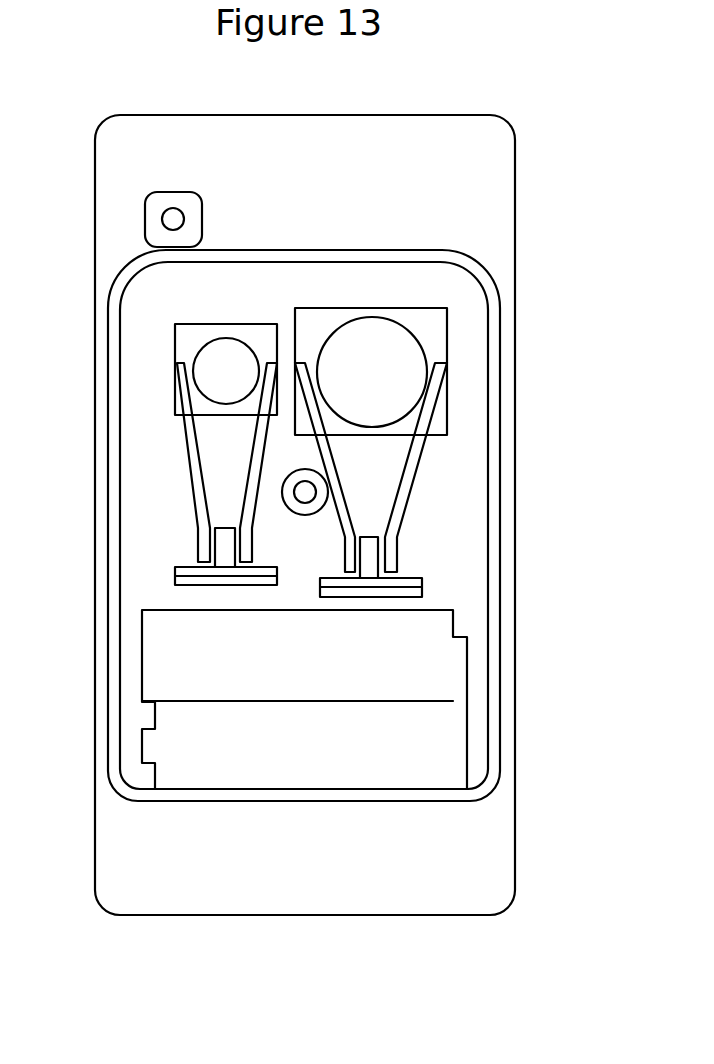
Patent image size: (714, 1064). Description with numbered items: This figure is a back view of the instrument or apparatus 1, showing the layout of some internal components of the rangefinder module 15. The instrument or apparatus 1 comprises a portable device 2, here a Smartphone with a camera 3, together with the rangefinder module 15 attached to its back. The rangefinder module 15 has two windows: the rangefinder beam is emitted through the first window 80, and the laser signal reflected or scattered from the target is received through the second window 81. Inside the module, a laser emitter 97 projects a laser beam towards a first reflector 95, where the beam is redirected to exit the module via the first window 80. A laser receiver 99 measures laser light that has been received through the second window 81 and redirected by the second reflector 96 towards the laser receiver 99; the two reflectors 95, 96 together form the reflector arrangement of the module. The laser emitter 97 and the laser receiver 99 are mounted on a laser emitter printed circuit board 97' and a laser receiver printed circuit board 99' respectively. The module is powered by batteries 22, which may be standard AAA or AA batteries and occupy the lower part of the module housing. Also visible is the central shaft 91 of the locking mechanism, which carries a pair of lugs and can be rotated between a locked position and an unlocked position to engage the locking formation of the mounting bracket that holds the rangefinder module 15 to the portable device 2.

The instrument or apparatus 1 is at (537, 112).
The portable device 2 is at (457, 200).
The camera 3 is at (160, 205).
The rangefinder module 15 is at (493, 643).
The batteries 22 is at (268, 655).
The first window 80 is at (228, 383).
The second window 81 is at (393, 378).
The central shaft 91 is at (305, 492).
The first reflector 95 is at (185, 337).
The second reflector 96 is at (463, 342).
The laser emitter 97 is at (152, 508).
The laser emitter printed circuit board 97' is at (157, 668).
The laser receiver 99 is at (476, 470).
The laser receiver printed circuit board 99' is at (477, 652).